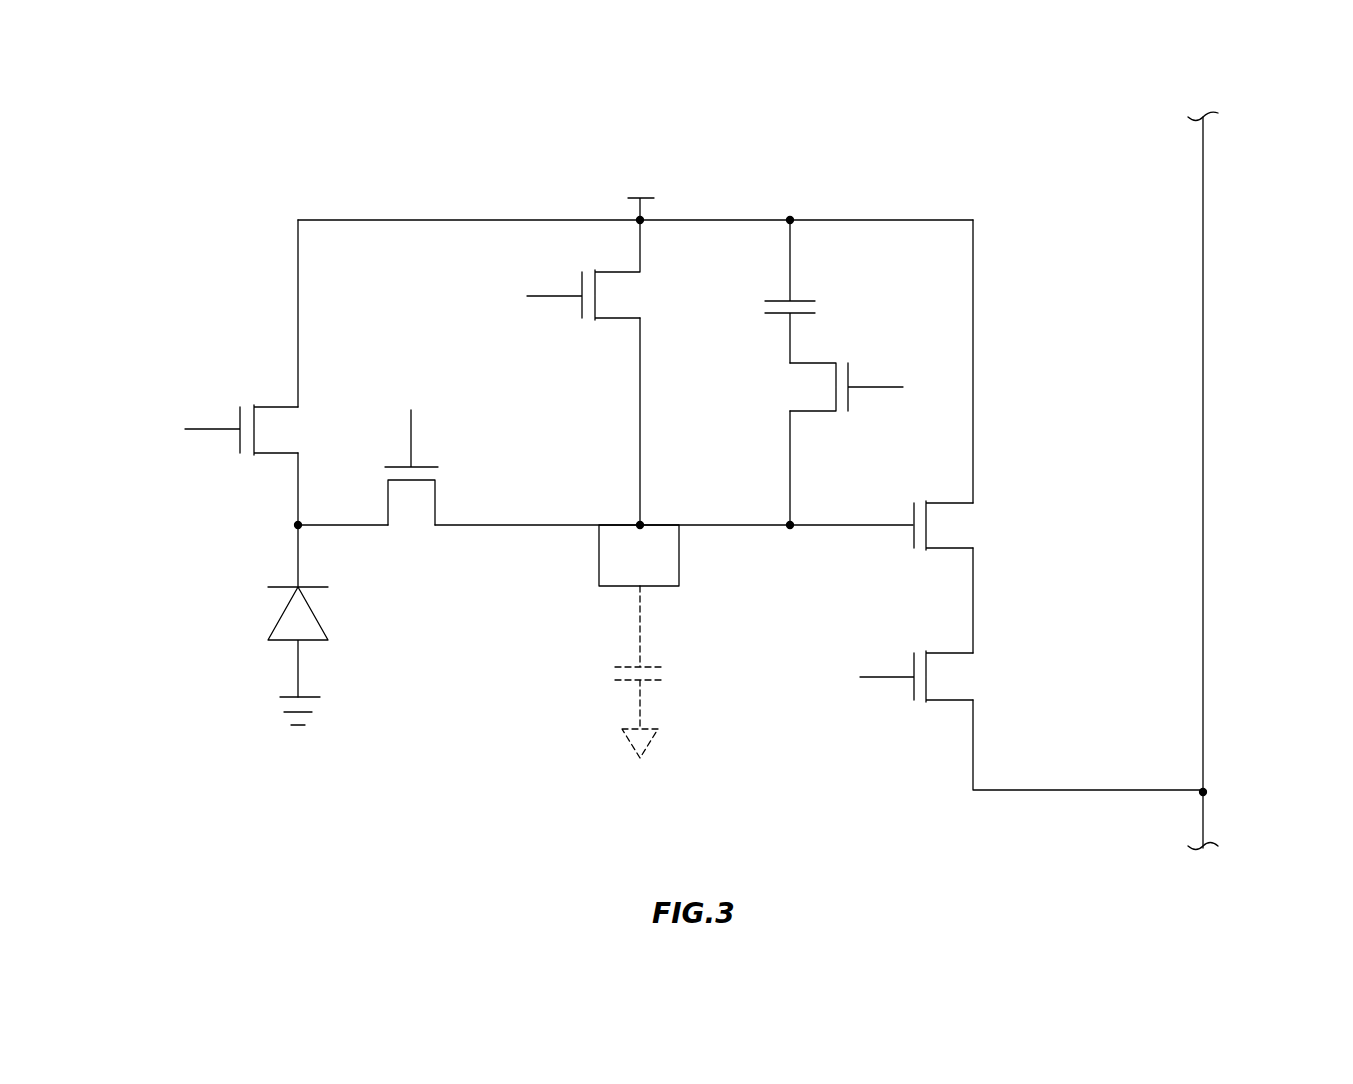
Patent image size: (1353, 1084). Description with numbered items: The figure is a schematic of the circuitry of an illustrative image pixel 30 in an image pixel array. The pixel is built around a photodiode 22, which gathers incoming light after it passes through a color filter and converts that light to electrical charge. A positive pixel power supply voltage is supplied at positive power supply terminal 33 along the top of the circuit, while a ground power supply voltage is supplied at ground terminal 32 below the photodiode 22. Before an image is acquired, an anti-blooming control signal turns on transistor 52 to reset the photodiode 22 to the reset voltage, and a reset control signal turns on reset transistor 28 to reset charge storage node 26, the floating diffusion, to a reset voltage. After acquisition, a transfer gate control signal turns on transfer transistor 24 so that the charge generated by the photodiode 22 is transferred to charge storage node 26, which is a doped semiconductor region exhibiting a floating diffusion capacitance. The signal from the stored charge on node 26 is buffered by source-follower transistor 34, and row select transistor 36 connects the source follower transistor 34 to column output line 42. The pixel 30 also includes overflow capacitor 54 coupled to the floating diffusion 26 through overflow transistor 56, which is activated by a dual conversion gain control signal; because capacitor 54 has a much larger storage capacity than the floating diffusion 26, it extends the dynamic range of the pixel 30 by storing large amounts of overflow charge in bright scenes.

The image pixel 30 is at (200, 130).
The photodiode 22 is at (283, 612).
The transfer transistor 24 is at (437, 480).
The charge storage node 26 is at (599, 550).
The reset transistor 28 is at (598, 320).
The ground terminal 32 is at (268, 713).
The positive power supply terminal 33 is at (628, 182).
The source-follower transistor 34 is at (955, 503).
The row select transistor 36 is at (936, 702).
The column output line 42 is at (1205, 515).
The transistor 52 is at (265, 405).
The overflow capacitor 54 is at (772, 316).
The overflow transistor 56 is at (812, 412).